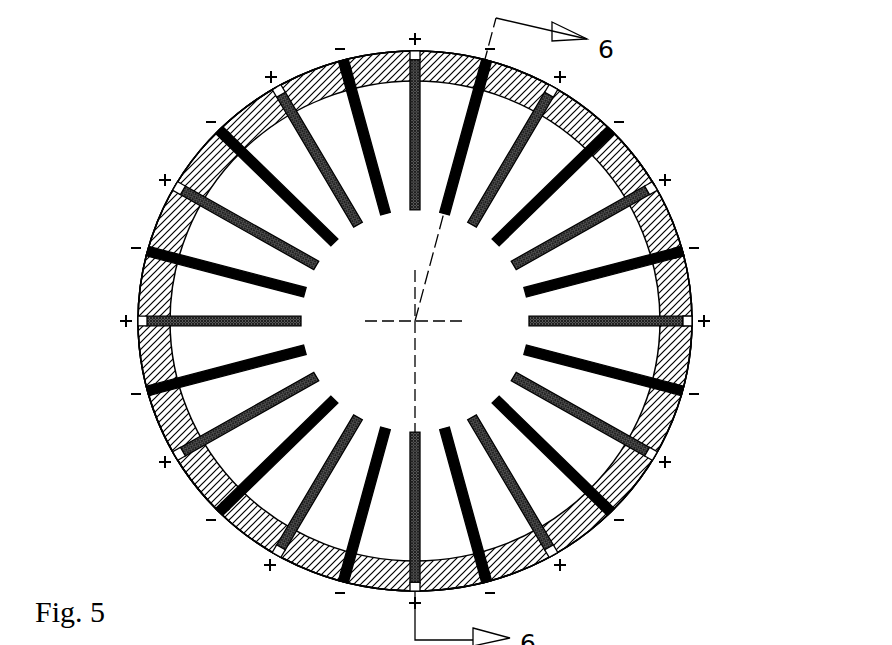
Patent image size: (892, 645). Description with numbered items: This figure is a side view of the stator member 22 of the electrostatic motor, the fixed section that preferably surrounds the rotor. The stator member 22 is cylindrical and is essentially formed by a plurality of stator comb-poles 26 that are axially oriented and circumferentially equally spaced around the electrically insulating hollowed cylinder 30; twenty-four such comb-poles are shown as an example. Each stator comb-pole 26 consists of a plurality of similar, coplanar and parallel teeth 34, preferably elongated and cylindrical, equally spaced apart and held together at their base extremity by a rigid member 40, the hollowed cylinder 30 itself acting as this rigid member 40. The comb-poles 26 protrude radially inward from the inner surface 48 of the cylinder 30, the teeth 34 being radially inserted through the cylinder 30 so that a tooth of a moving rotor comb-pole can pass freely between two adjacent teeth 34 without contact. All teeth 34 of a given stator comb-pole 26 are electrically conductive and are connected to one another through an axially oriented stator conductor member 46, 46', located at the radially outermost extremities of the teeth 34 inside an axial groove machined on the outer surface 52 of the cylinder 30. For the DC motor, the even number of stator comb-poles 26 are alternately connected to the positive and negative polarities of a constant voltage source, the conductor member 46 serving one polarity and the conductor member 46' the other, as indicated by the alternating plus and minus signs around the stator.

The stator member 22 is at (638, 553).
The stator comb-pole 26 is at (167, 433).
The hollowed cylinder 30 is at (672, 425).
The teeth 34 is at (297, 320).
The rigid member 40 is at (633, 160).
The stator conductor member 46 is at (741, 254).
The stator conductor member 46' is at (750, 328).
The inner surface 48 is at (260, 128).
The outer surface 52 is at (312, 72).